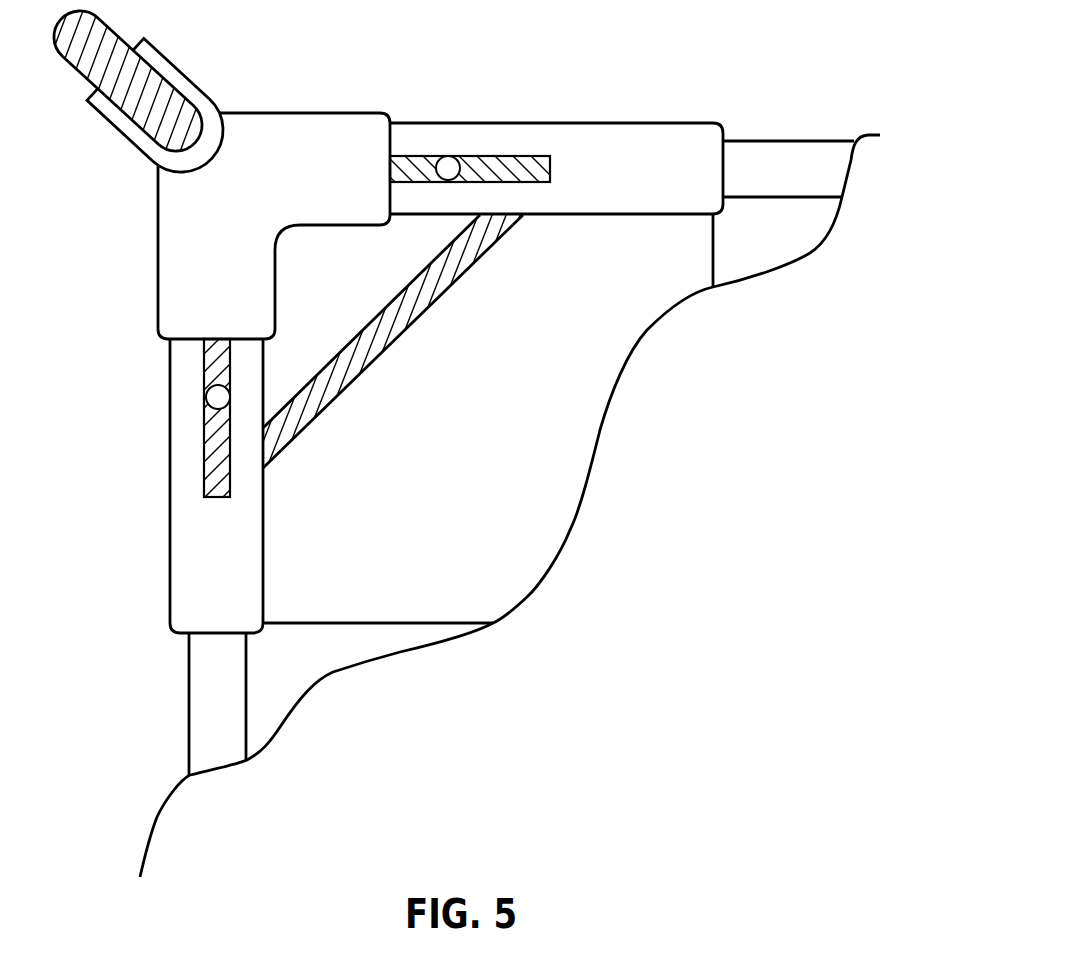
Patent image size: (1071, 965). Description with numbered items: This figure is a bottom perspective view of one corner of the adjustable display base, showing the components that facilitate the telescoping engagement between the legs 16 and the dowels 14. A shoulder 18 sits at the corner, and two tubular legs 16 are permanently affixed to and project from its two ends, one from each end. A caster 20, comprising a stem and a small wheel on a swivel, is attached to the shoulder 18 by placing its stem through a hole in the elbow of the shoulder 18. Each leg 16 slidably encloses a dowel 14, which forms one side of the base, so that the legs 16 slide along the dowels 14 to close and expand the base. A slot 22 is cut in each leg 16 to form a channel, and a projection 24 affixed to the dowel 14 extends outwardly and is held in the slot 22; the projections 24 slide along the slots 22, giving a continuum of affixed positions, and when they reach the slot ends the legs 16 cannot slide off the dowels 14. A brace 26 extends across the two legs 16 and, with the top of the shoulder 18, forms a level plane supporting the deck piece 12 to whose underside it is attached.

The deck piece 12 is at (590, 380).
The dowel 14 is at (782, 163).
The tubular leg 16 is at (607, 147).
The shoulder 18 is at (335, 137).
The caster 20 is at (105, 123).
The slot 22 is at (513, 168).
The projection 24 is at (448, 155).
The brace 26 is at (387, 333).